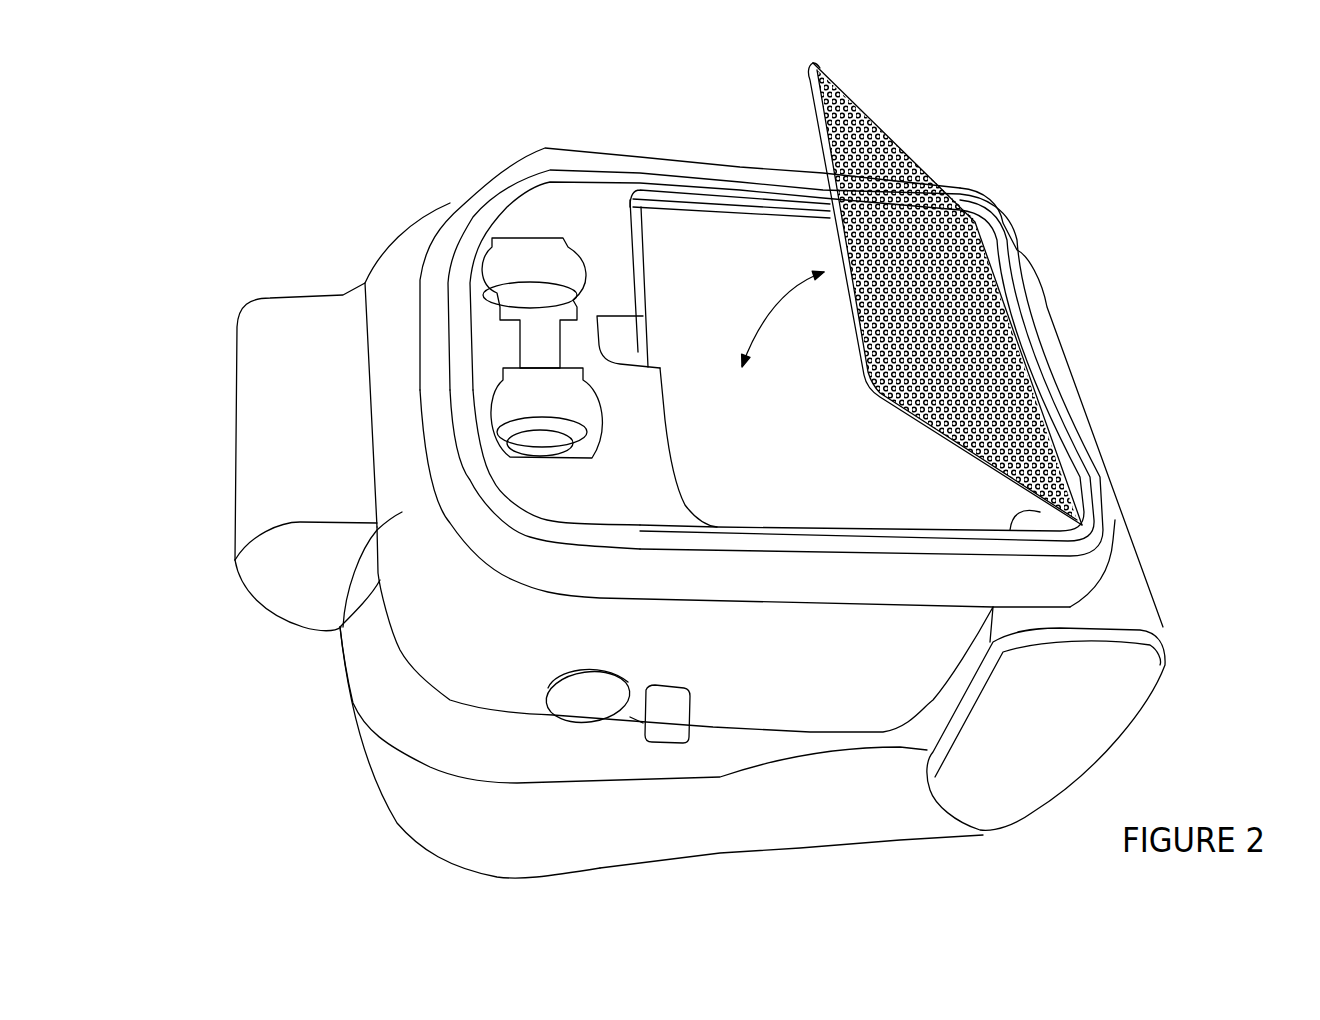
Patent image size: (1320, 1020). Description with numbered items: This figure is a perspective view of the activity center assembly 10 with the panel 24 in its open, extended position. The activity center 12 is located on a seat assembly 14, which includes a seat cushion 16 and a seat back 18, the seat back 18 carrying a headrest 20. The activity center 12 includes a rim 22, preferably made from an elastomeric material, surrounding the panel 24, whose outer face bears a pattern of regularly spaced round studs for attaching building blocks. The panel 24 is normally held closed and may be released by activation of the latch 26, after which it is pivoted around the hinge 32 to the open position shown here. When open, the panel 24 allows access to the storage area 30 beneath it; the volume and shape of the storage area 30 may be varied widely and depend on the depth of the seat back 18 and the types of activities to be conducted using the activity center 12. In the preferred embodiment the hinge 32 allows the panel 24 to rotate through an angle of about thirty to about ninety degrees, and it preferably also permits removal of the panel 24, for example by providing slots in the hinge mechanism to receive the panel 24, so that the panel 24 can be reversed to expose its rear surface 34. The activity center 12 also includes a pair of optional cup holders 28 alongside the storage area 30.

The activity center assembly 10 is at (1073, 268).
The activity center 12 is at (519, 148).
The seat assembly 14 is at (763, 858).
The seat cushion 16 is at (427, 813).
The seat back 18 is at (340, 630).
The headrest 20 is at (293, 293).
The rim 22 is at (1095, 557).
The panel 24 is at (885, 137).
The latch 26 is at (620, 350).
The cup holders 28 is at (490, 280).
The storage area 30 is at (710, 273).
The hinge 32 is at (1035, 517).
The rear surface 34 is at (818, 147).